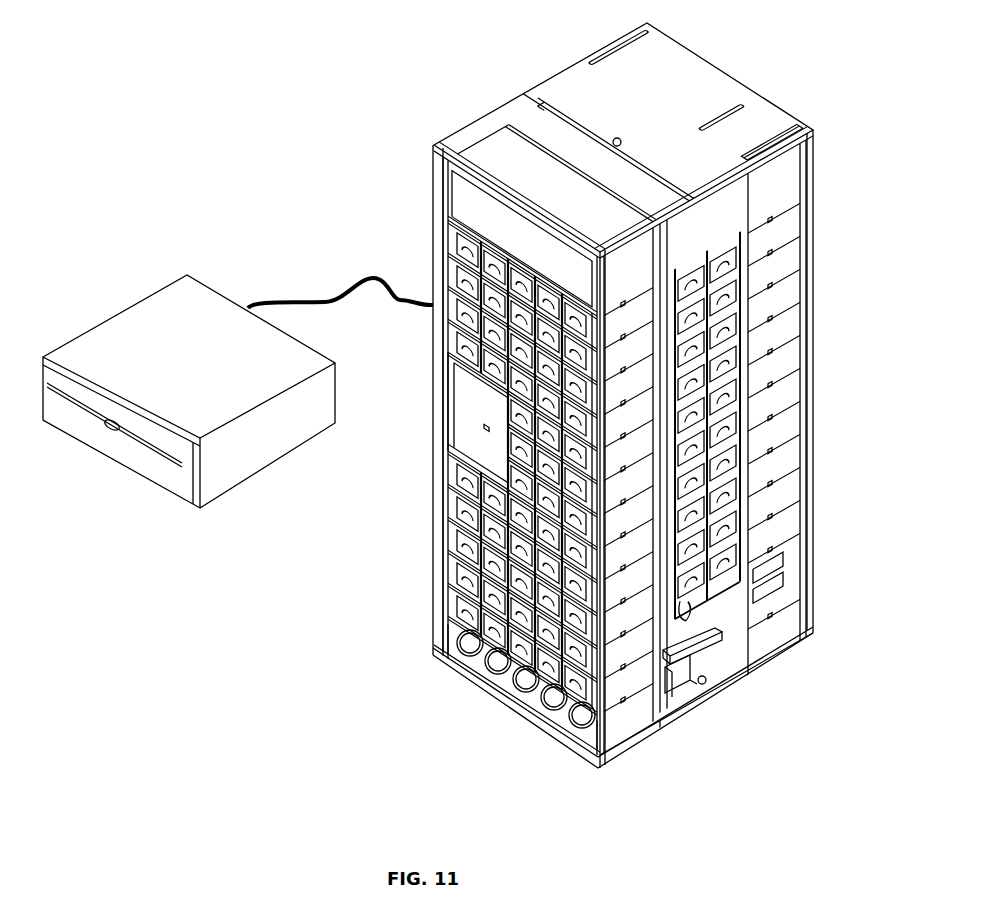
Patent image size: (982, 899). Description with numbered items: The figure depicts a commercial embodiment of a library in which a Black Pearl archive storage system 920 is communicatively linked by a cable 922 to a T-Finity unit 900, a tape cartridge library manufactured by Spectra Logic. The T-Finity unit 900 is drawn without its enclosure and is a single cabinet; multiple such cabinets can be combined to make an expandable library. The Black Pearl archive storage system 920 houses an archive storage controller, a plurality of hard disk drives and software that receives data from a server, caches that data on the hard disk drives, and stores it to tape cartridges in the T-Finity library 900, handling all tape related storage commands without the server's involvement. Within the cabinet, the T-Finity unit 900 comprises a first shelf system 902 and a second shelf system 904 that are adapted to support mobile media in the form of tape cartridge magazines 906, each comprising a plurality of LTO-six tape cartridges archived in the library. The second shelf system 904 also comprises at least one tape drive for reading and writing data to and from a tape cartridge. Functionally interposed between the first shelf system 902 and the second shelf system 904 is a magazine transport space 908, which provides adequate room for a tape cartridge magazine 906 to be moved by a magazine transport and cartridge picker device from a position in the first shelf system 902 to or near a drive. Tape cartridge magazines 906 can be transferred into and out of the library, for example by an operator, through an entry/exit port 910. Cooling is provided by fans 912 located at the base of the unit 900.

The T-Finity unit 900 is at (468, 86).
The first shelf system 902 is at (418, 502).
The second shelf system 904 is at (830, 410).
The tape cartridge magazines 906 is at (447, 262).
The magazine transport space 908 is at (718, 655).
The entry/exit port 910 is at (472, 425).
The fans 912 is at (467, 683).
The Black Pearl archive storage system 920 is at (167, 287).
The cable 922 is at (332, 293).